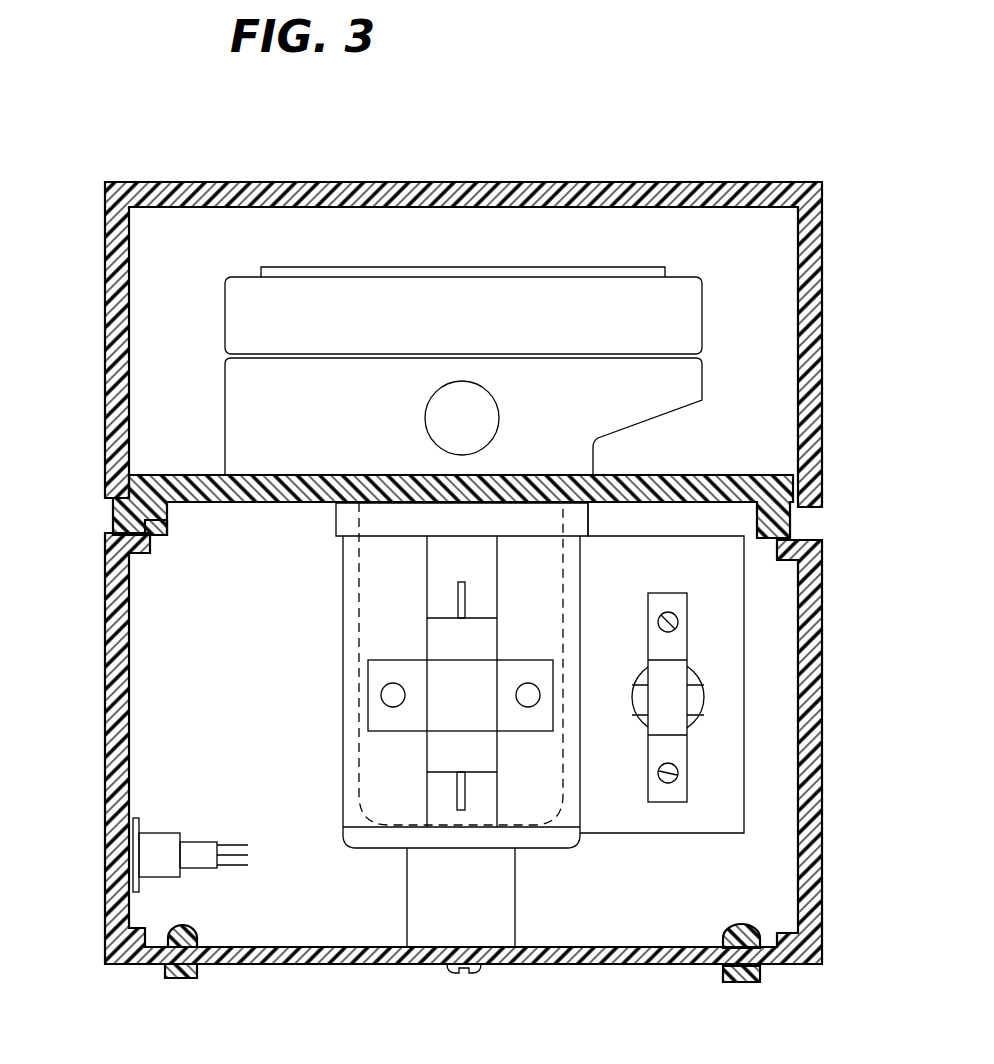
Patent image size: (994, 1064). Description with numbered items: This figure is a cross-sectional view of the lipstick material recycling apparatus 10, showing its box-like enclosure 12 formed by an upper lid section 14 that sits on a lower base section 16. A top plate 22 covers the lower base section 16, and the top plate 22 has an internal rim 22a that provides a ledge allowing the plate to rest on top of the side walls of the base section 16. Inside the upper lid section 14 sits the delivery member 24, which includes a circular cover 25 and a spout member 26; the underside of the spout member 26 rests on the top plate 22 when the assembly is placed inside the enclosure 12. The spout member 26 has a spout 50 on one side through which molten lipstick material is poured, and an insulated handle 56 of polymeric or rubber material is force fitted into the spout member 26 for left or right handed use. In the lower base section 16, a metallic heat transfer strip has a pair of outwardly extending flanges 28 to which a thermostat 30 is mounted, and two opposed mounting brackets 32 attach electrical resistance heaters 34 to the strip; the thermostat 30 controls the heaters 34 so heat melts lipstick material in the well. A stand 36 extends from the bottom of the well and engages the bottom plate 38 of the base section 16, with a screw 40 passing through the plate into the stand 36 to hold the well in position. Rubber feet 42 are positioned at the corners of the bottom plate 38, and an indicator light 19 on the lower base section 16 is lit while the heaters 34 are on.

The lipstick material recycling apparatus 10 is at (640, 137).
The box-like enclosure 12 is at (82, 200).
The upper lid section 14 is at (727, 182).
The lower base section 16 is at (815, 880).
The indicator light 19 is at (112, 880).
The top plate 22 is at (192, 476).
The internal rim 22a is at (167, 535).
The delivery member 24 is at (660, 428).
The circular cover 25 is at (402, 267).
The spout member 26 is at (615, 378).
The outwardly extending flanges 28 is at (612, 822).
The thermostat 30 is at (697, 696).
The mounting brackets 32 is at (437, 722).
The electrical resistance heaters 34 is at (487, 748).
The stand 36 is at (407, 905).
The bottom plate 38 is at (630, 955).
The screw 40 is at (475, 968).
The feet 42 is at (197, 968).
The spout 50 is at (700, 358).
The insulated handle 56 is at (448, 416).